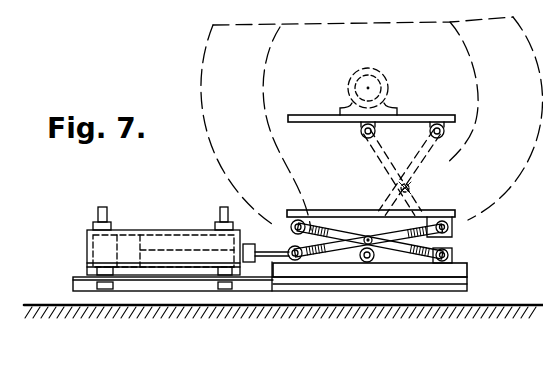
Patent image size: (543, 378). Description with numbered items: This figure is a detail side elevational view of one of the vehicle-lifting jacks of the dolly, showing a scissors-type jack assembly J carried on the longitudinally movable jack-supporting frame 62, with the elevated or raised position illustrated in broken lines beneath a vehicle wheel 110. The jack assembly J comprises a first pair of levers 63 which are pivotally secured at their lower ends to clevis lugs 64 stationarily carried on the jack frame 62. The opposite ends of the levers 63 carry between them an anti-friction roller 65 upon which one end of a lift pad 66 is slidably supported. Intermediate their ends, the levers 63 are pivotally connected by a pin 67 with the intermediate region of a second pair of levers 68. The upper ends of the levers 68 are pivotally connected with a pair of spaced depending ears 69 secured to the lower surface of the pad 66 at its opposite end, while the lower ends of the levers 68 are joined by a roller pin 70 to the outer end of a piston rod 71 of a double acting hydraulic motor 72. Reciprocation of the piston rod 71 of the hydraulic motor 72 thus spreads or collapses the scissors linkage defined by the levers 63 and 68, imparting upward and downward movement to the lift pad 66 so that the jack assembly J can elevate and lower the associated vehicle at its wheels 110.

The front and rear wheels 110 is at (205, 89).
The lift pad 66 is at (318, 113).
The second pair of levers 68 is at (446, 164).
The first pair of levers 63 is at (379, 160).
The pin 67 is at (401, 189).
The anti-friction roller 65 is at (291, 233).
The depending ears 69 is at (450, 227).
The clevis lugs 64 is at (450, 261).
The roller pin 70 is at (298, 261).
The jack-supporting frame 62 is at (354, 284).
The hydraulic motor 72 is at (158, 230).
The piston rod 71 is at (267, 250).
The jack assembly J is at (466, 248).